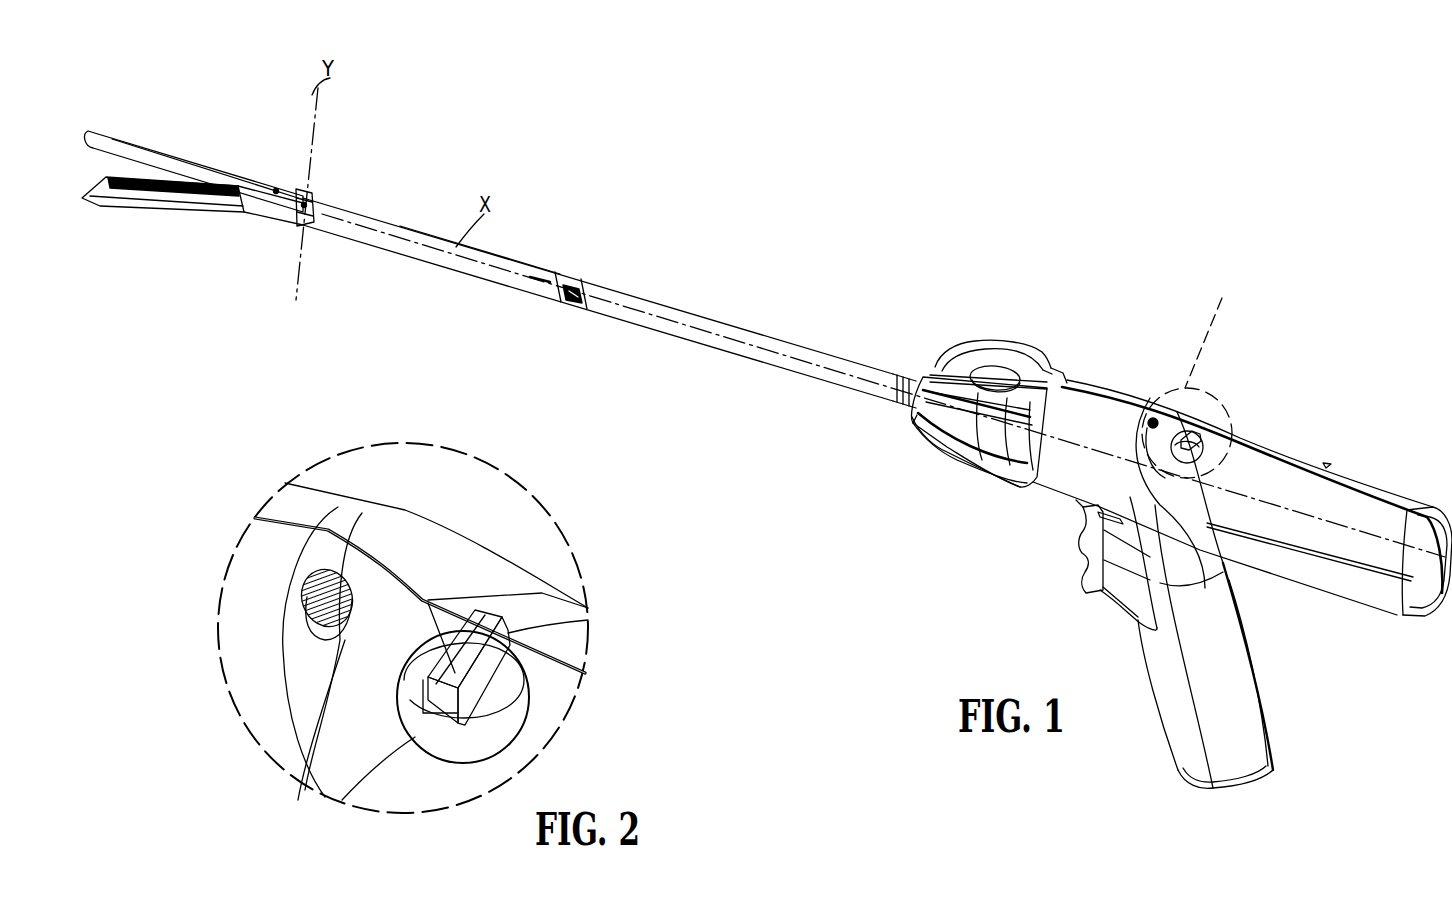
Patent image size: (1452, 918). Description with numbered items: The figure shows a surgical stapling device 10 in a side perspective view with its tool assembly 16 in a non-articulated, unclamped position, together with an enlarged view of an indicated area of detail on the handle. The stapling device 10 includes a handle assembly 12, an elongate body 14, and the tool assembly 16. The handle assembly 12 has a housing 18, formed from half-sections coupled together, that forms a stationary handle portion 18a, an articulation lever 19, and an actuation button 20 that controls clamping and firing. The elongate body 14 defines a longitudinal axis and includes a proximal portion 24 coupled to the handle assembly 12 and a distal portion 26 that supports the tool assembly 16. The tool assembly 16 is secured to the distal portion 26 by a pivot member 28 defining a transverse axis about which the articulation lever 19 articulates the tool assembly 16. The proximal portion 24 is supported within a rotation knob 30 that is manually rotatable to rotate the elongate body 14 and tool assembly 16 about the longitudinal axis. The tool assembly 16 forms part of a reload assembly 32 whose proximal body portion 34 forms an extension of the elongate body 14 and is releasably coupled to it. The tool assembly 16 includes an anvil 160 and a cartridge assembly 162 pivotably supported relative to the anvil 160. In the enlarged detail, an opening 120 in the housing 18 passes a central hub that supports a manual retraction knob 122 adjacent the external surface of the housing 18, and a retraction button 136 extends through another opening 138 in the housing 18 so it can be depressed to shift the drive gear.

In FIG. 1, the stapling device 10 is at (852, 234).
In FIG. 1, the handle assembly 12 is at (1231, 526).
In FIG. 2, the handle assembly 12 is at (427, 653).
In FIG. 1, the elongate body 14 is at (690, 300).
In FIG. 1, the tool assembly 16 is at (192, 184).
In FIG. 1, the housing 18 is at (1333, 517).
In FIG. 2, the housing 18 is at (483, 548).
In FIG. 1, the stationary handle portion 18a is at (1212, 689).
In FIG. 1, the articulation lever 19 is at (1003, 345).
In FIG. 1, the actuation button 20 is at (1063, 544).
In FIG. 1, the proximal portion 24 is at (887, 360).
In FIG. 1, the distal portion 26 is at (600, 287).
In FIG. 1, the pivot member 28 is at (310, 199).
In FIG. 1, the rotation knob 30 is at (977, 445).
In FIG. 1, the reload assembly 32 is at (395, 213).
In FIG. 1, the proximal body portion 34 is at (345, 240).
In FIG. 1, the opening 120 is at (1197, 435).
In FIG. 2, the opening 120 is at (528, 729).
In FIG. 2, the manual retraction knob 122 is at (520, 645).
In FIG. 1, the retraction button 136 is at (1152, 417).
In FIG. 2, the retraction button 136 is at (322, 597).
In FIG. 1, the opening 138 is at (1163, 425).
In FIG. 2, the opening 138 is at (325, 737).
In FIG. 1, the anvil 160 is at (118, 137).
In FIG. 1, the cartridge assembly 162 is at (136, 222).